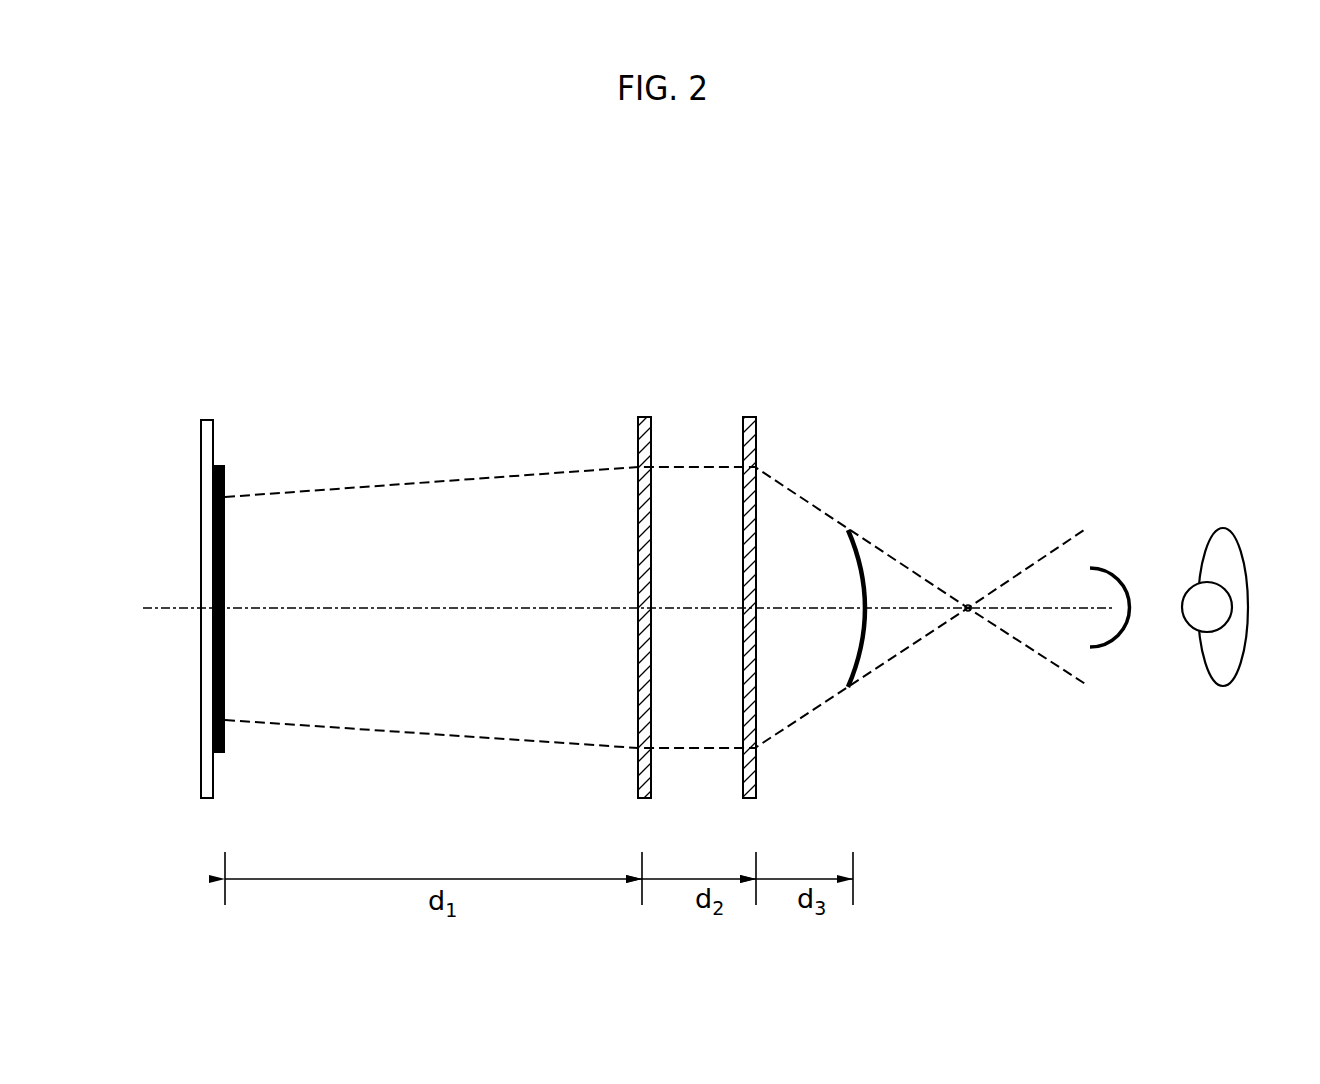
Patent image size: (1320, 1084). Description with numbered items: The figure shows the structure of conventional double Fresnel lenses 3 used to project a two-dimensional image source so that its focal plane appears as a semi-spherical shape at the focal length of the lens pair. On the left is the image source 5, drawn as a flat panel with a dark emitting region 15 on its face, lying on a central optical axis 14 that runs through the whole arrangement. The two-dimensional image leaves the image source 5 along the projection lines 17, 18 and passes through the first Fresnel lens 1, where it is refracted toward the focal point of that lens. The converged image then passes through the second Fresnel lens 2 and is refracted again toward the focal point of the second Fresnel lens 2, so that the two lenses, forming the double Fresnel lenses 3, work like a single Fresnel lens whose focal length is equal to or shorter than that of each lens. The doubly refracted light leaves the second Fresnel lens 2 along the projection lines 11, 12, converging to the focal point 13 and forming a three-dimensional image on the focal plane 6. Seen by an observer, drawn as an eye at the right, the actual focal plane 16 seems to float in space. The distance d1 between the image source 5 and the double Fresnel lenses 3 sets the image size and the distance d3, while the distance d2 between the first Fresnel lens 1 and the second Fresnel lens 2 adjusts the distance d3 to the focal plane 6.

The first Fresnel lens 1 is at (638, 512).
The second Fresnel lens 2 is at (756, 520).
The double Fresnel lenses 3 is at (640, 402).
The image source 5 is at (207, 418).
The focal plane 6 is at (858, 536).
The projection line 11 is at (1053, 549).
The projection line 12 is at (1057, 672).
The focal length 13 is at (968, 604).
The optical axis 14 is at (170, 607).
The light emitting region 15 is at (225, 477).
The actual focal plane 16 is at (1108, 570).
The projection line 17 is at (411, 485).
The projection line 18 is at (399, 732).